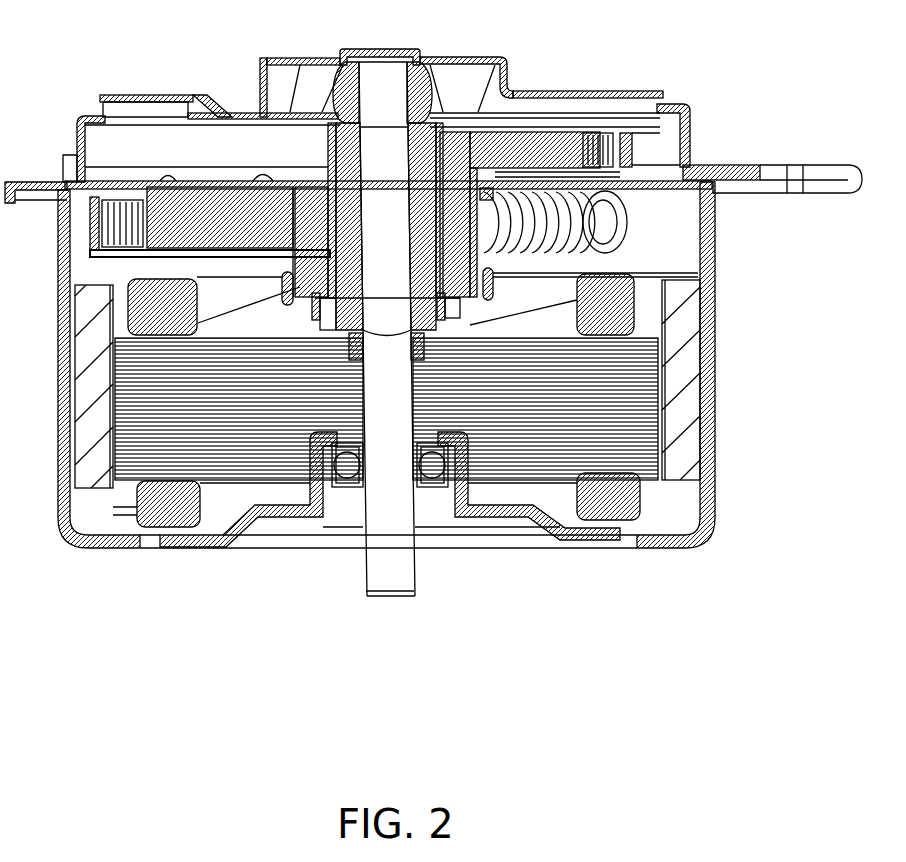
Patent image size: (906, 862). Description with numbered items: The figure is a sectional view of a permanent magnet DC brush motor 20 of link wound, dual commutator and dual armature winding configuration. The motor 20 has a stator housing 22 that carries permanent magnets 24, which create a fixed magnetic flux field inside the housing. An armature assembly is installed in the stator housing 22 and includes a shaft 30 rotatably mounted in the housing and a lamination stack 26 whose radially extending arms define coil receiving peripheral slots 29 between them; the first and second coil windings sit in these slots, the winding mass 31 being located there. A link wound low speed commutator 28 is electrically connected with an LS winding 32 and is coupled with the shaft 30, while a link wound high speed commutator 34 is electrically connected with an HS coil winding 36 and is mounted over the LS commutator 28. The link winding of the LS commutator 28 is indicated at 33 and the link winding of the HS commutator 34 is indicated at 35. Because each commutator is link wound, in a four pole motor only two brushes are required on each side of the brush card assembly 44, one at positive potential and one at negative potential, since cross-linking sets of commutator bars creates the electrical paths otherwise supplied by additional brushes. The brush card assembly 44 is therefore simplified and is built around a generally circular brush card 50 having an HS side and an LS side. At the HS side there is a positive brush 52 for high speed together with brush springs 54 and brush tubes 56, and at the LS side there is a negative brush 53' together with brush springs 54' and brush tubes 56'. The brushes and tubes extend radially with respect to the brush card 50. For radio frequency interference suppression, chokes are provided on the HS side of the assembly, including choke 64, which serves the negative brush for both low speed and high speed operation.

The motor 20 is at (814, 72).
The stator housing 22 is at (62, 418).
The permanent magnets 24 is at (83, 478).
The lamination stack 26 is at (660, 387).
The LS commutator 28 is at (421, 128).
The coil receiving peripheral slots 29 is at (658, 484).
The shaft 30 is at (380, 580).
The winding mass 31 is at (580, 500).
The LS winding 32 is at (306, 320).
The link winding of the LS commutator 33 is at (398, 335).
The HS commutator 34 is at (311, 200).
The link winding of the HS commutator 35 is at (400, 298).
The HS coil winding 36 is at (555, 307).
The brush card assembly 44 is at (192, 182).
The brush card 50 is at (712, 212).
The positive brush 52 is at (226, 198).
The negative brush 53' is at (535, 102).
The brush springs 54 is at (73, 191).
The brush springs 54' is at (660, 139).
The brush tubes 56 is at (167, 239).
The brush tubes 56' is at (616, 88).
The choke 64 is at (630, 226).